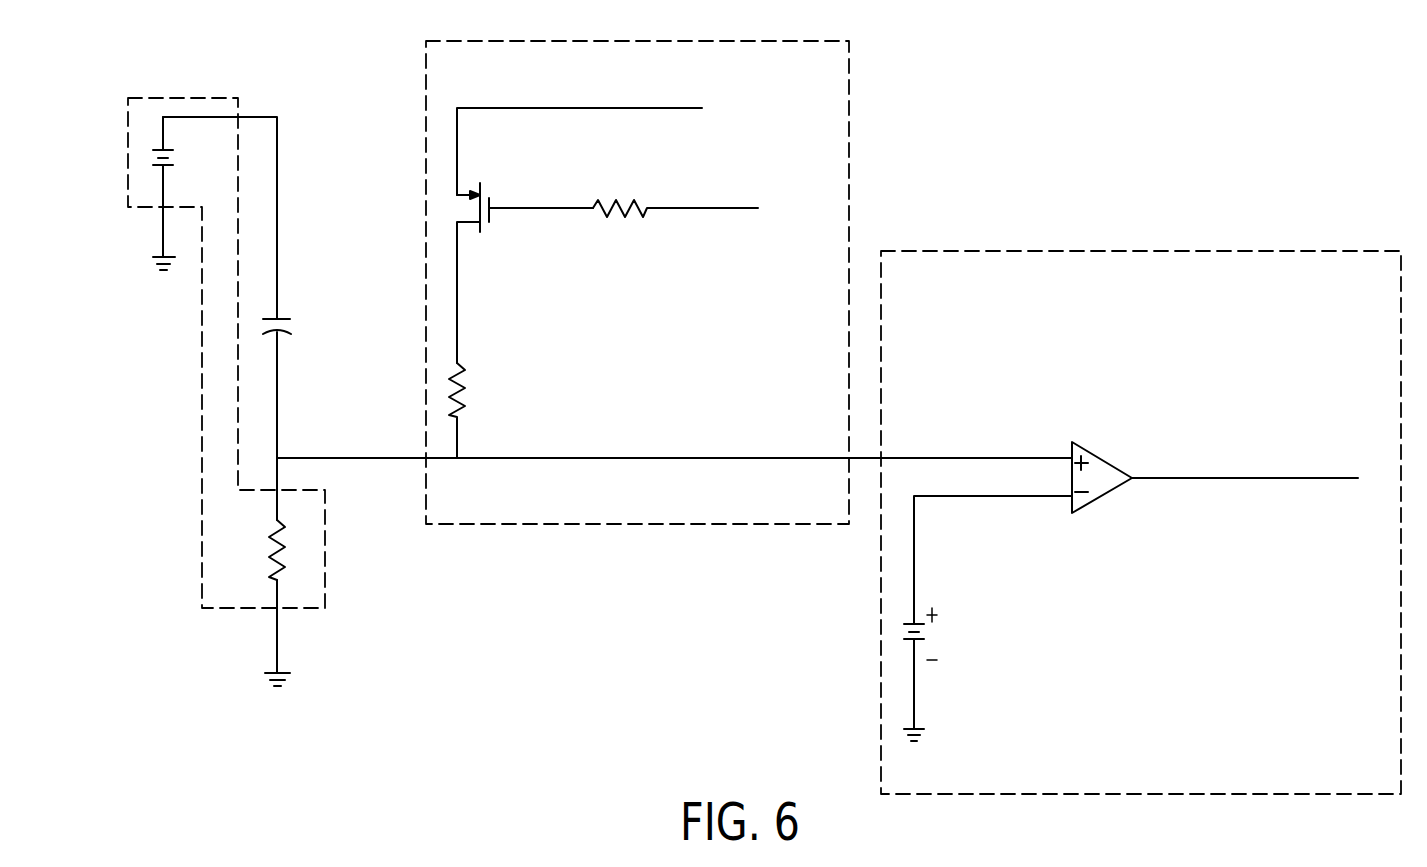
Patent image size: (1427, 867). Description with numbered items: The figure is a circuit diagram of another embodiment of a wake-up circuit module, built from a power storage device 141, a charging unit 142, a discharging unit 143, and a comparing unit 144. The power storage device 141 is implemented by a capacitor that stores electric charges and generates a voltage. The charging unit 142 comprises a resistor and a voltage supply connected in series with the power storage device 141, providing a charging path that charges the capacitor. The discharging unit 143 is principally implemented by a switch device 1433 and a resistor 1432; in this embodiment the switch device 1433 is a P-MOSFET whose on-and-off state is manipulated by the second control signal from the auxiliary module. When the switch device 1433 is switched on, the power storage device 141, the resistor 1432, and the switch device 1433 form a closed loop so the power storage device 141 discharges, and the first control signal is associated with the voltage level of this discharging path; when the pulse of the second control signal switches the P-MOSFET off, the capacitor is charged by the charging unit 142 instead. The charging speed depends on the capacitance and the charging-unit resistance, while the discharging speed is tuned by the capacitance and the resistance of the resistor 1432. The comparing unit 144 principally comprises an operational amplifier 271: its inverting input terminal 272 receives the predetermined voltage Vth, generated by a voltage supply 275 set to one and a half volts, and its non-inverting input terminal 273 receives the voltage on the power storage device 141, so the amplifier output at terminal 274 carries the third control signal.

The power storage device 141 is at (290, 298).
The charging unit 142 is at (183, 97).
The discharging unit 143 is at (425, 65).
The resistor 1432 is at (468, 397).
The switch device 1433 is at (490, 223).
The comparing unit 144 is at (975, 251).
The operational amplifier 271 is at (1100, 457).
The inverting input terminal 272 is at (993, 560).
The non-inverting input terminal 273 is at (1016, 438).
The output terminal 274 is at (1245, 498).
The voltage supply 275 is at (905, 627).